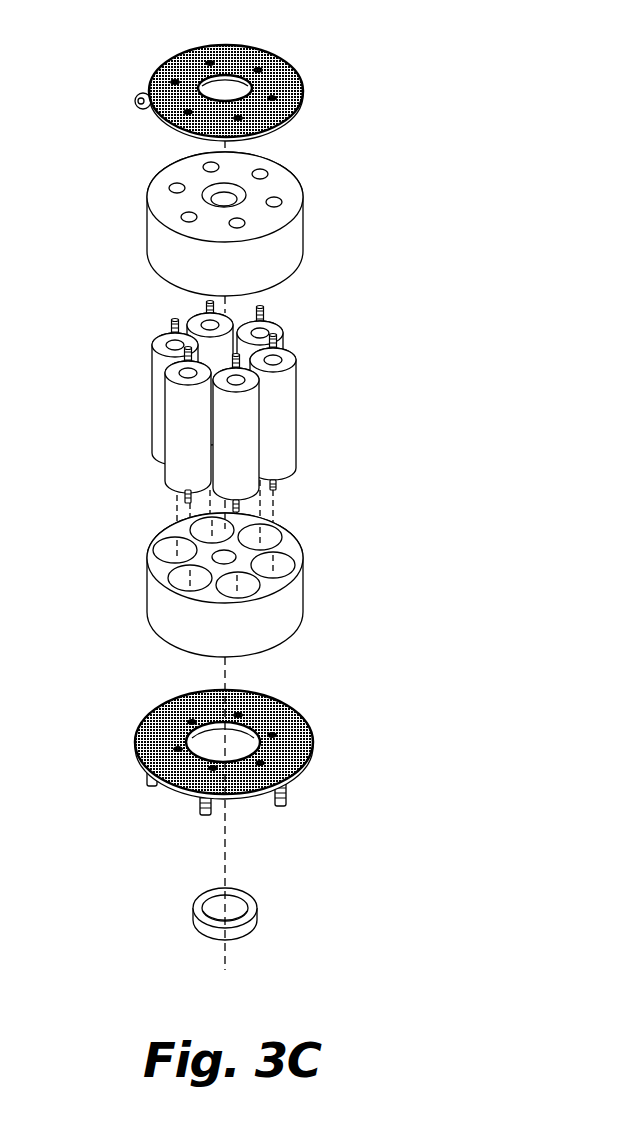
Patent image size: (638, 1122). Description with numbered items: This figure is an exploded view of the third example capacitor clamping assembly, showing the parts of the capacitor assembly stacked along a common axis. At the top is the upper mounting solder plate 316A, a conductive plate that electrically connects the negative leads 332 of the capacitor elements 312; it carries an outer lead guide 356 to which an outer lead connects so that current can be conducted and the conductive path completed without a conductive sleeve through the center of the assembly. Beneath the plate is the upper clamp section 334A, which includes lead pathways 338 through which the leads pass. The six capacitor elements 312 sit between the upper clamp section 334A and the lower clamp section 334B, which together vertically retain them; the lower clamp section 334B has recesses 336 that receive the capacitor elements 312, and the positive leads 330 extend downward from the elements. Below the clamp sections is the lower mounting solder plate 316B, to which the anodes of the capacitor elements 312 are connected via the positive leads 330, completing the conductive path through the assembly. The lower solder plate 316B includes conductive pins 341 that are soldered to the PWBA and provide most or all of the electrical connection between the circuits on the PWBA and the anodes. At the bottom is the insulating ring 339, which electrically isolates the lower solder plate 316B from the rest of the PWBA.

The capacitor elements 312 is at (242, 407).
The upper mounting solder plate 316A is at (211, 70).
The lower mounting solder plate 316B is at (298, 774).
The positive lead 330 is at (183, 500).
The negative lead 332 is at (172, 323).
The upper clamp section 334A is at (207, 223).
The lower clamp section 334B is at (220, 585).
The recesses 336 is at (284, 560).
The lead pathways 338 is at (275, 200).
The insulating ring 339 is at (196, 922).
The conductive pins 341 is at (278, 808).
The outer lead guide 356 is at (137, 95).